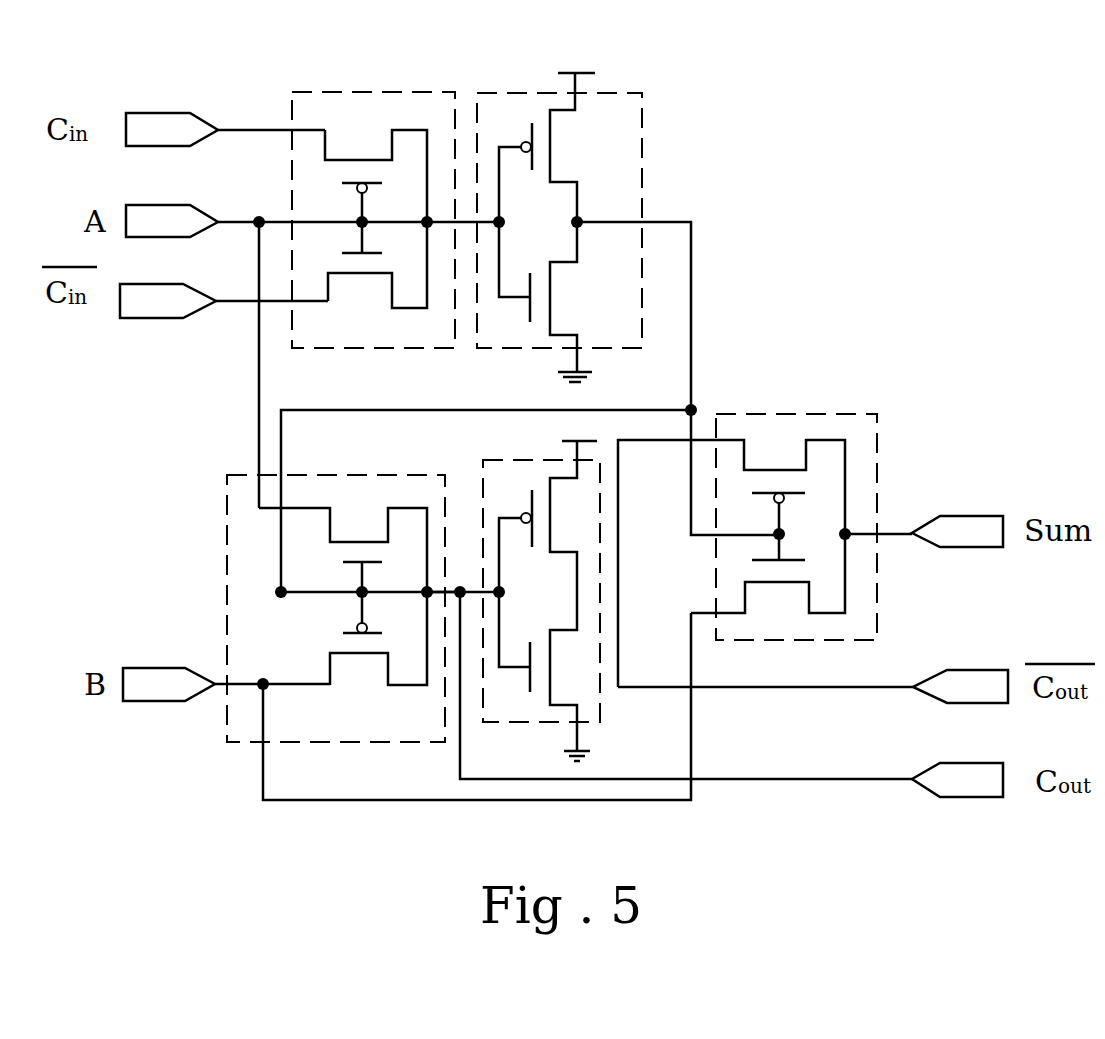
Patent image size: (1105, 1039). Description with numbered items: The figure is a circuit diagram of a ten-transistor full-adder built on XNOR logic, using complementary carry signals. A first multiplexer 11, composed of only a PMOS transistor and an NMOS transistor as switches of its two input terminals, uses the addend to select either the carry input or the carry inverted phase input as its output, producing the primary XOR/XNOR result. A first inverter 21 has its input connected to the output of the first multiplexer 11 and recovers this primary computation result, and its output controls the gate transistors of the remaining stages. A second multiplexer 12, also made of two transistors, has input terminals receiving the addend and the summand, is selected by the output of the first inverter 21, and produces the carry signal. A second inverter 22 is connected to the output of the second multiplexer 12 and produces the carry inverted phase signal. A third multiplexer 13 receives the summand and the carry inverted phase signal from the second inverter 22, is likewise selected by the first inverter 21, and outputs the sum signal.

The first multiplexer 11 is at (358, 98).
The second multiplexer 12 is at (237, 578).
The third multiplexer 13 is at (782, 420).
The first inverter 21 is at (630, 133).
The second inverter 22 is at (495, 465).